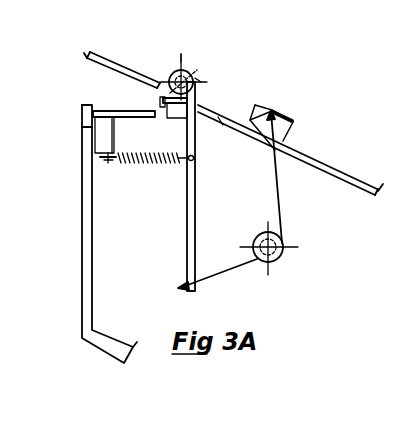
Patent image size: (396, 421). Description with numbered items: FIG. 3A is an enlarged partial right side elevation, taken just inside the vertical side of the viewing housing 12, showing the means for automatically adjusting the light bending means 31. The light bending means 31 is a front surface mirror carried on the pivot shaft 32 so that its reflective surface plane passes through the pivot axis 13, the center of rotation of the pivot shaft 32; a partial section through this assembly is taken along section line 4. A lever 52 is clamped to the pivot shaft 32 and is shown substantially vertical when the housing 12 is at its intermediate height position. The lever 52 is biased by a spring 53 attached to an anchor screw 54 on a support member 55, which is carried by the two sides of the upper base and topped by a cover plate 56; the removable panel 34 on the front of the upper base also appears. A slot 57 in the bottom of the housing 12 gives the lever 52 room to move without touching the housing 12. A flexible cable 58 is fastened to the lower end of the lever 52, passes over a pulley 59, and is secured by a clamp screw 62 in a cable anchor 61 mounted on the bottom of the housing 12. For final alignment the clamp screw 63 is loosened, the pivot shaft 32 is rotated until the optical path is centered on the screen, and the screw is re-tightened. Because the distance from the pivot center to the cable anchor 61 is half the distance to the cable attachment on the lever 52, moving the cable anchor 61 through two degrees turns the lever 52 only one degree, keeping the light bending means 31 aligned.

The section line 4- 4 is at (173, 162).
The viewing housing 12 is at (103, 57).
The pivot axis 13 is at (178, 62).
The light bending means 31 is at (193, 67).
The pivot shaft 32 is at (197, 80).
The removable panel 34 is at (92, 247).
The lever 52 is at (187, 258).
The spring 53 is at (151, 164).
The anchor screw 54 is at (109, 164).
The support member 55 is at (114, 133).
The cover plate 56 is at (100, 111).
The slot 57 is at (160, 83).
The flexible cable 58 is at (278, 200).
The pulley 59 is at (279, 261).
The cable anchor 61 is at (258, 105).
The clamp screw 62 is at (292, 120).
The clamp screw 63 is at (162, 100).